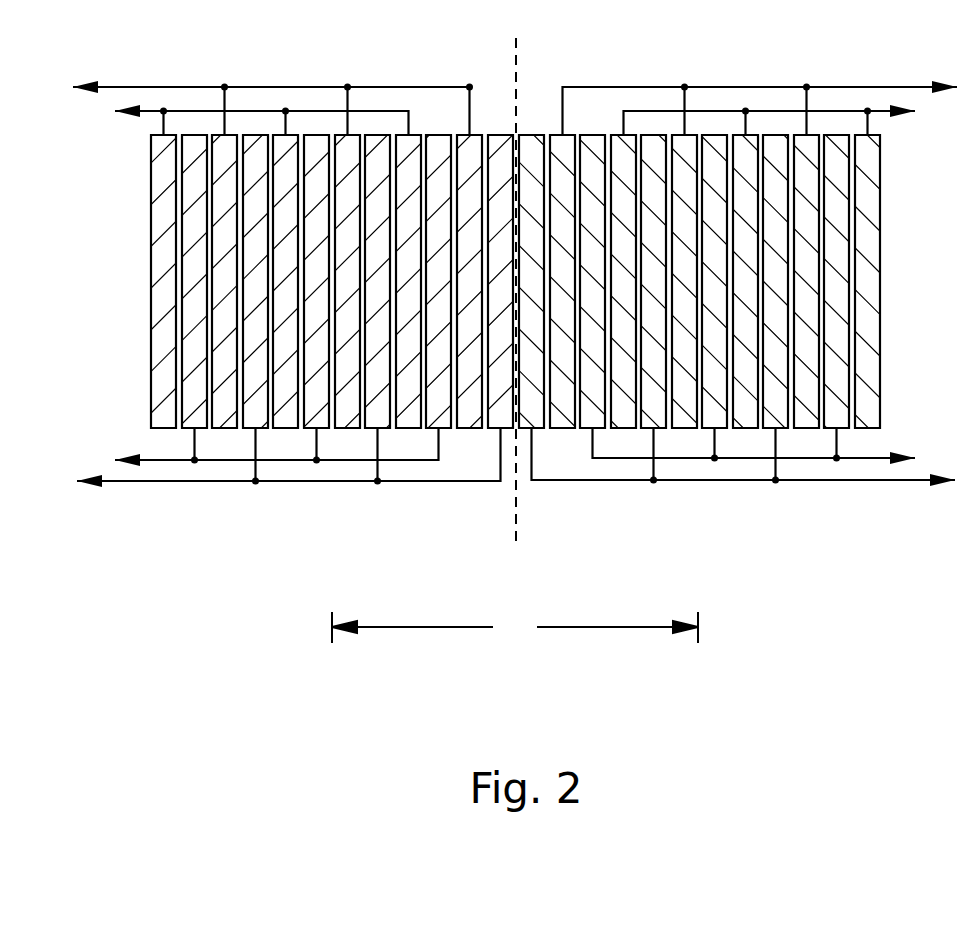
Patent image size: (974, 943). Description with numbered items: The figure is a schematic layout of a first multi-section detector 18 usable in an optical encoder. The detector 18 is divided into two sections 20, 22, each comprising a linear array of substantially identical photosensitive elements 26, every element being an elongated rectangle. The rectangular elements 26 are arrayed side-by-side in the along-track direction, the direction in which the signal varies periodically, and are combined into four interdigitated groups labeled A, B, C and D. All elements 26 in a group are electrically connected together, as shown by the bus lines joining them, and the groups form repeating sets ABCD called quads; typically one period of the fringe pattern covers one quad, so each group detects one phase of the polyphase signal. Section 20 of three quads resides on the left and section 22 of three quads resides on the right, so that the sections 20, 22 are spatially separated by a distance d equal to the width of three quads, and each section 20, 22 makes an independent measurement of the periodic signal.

The detector 18 is at (487, 340).
The section 20 is at (402, 354).
The section 22 is at (522, 500).
The photosensitive element 26 is at (222, 193).